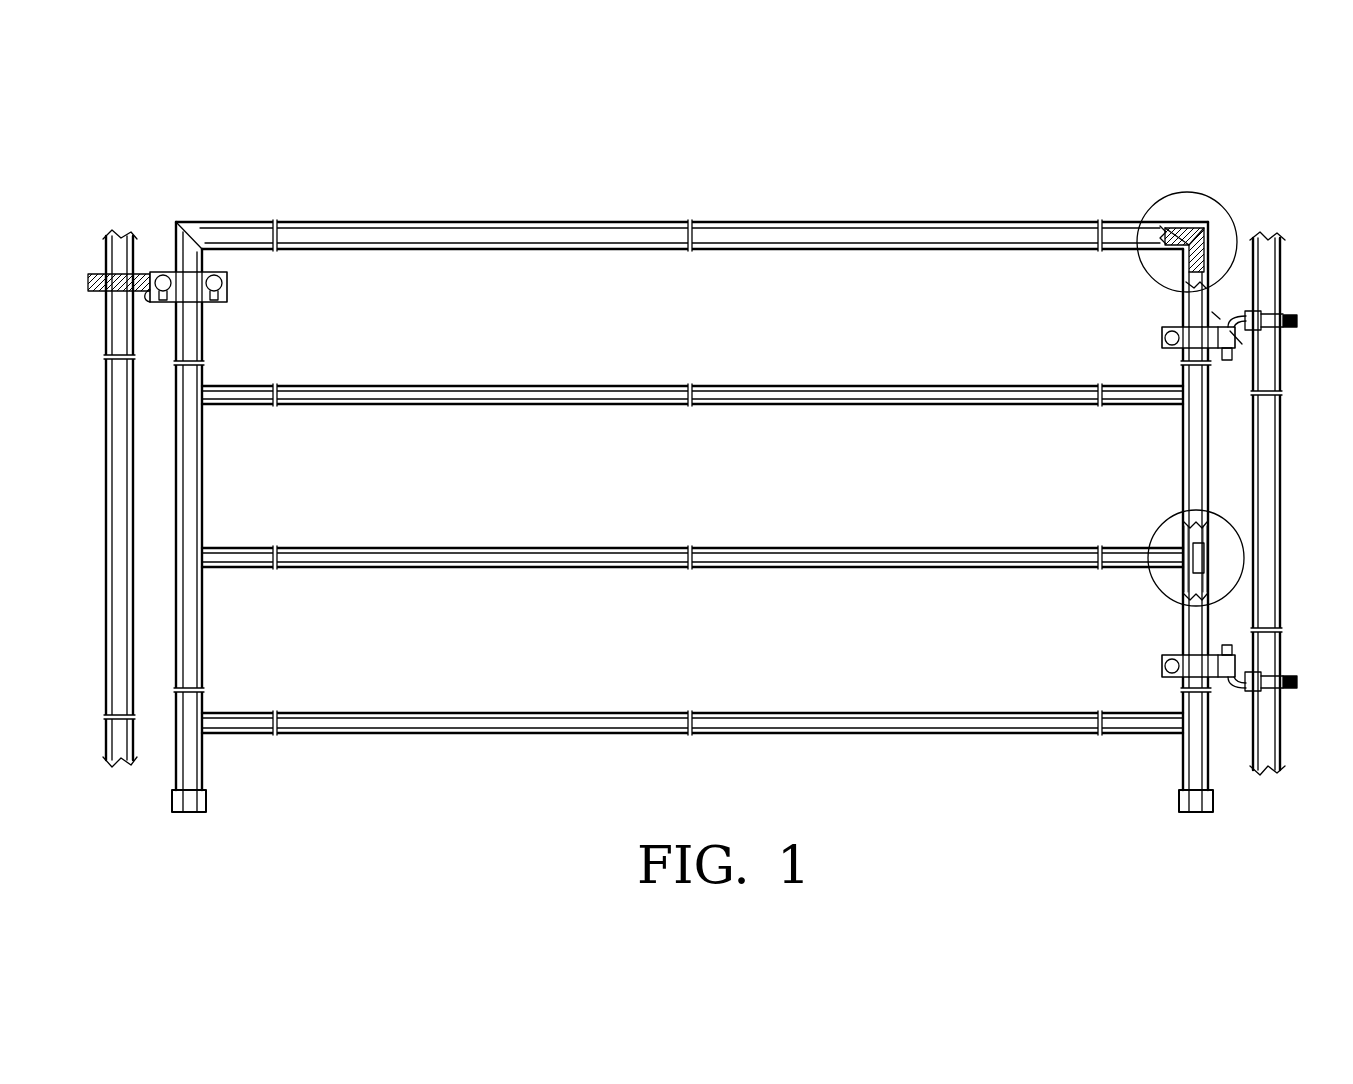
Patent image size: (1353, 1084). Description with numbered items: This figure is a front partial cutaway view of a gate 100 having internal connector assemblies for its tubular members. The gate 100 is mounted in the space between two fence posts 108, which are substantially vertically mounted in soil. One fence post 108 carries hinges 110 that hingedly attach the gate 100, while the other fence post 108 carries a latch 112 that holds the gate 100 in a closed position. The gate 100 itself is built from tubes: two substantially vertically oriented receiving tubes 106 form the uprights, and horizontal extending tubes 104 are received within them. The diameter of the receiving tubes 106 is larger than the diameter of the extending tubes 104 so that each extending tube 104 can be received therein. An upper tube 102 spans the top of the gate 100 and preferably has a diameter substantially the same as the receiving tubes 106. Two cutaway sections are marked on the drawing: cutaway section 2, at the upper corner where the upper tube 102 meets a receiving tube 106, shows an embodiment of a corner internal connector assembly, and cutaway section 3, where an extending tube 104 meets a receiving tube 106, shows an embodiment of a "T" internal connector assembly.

The gate 100 is at (1236, 163).
The upper tube 102 is at (921, 230).
The extending tubes 104 is at (935, 395).
The receiving tubes 106 is at (190, 483).
The fence posts 108 is at (1262, 237).
The hinges 110 is at (1226, 360).
The latch 112 is at (157, 272).
The cutaway section 2 is at (1150, 200).
The cutaway section 3 is at (1160, 520).